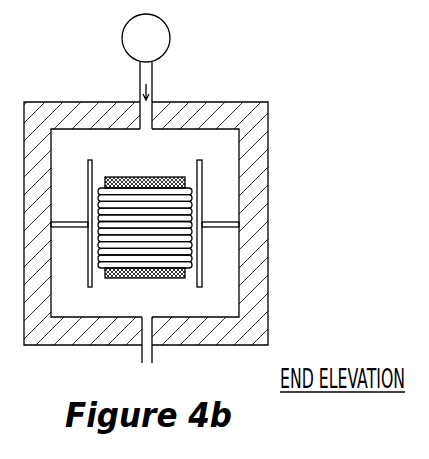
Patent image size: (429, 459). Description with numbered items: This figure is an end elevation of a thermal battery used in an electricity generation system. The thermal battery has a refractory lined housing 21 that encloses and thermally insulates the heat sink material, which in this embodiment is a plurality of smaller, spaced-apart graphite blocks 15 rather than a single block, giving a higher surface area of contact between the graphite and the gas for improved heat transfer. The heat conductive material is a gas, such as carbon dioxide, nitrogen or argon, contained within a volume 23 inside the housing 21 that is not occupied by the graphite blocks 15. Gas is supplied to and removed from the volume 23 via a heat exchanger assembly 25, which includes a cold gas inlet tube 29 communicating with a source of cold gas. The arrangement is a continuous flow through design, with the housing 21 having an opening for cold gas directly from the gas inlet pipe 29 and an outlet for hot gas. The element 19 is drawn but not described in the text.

The graphite block 15 is at (185, 180).
The coil 19 is at (170, 212).
The refractory lined housing 21 is at (153, 80).
The volume 23 is at (225, 152).
The heat exchanger assembly 25 is at (180, 20).
The cold gas inlet tube 29 is at (153, 356).